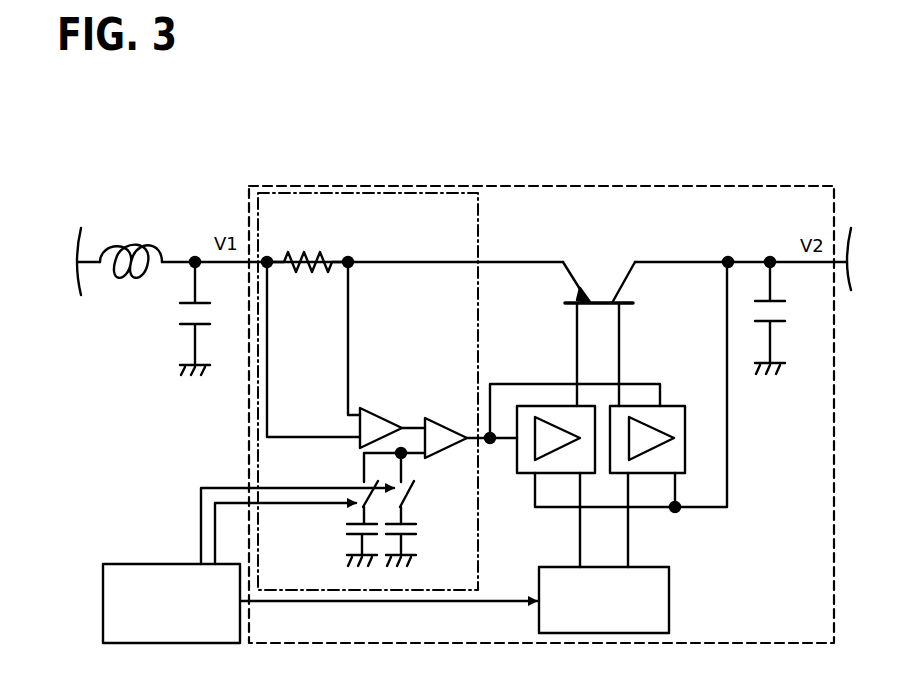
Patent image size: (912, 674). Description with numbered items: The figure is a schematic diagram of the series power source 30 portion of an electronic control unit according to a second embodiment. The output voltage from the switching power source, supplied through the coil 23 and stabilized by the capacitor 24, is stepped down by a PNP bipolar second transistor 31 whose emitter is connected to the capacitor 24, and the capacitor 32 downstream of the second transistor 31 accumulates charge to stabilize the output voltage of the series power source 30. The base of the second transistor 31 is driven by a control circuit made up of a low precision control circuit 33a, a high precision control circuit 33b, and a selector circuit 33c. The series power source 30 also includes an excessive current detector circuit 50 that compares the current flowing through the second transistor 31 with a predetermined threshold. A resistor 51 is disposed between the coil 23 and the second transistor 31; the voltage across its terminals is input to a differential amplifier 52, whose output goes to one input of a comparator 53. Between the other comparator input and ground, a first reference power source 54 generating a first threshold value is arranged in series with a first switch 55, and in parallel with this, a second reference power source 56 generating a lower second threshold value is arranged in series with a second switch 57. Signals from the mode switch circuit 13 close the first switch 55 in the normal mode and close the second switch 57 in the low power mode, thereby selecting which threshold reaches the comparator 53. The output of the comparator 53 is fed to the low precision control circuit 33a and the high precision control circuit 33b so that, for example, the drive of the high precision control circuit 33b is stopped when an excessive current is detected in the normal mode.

The mode switch circuit 13 is at (126, 563).
The coil 23 is at (133, 243).
The capacitor 24 is at (182, 322).
The series power source 30 is at (781, 185).
The second transistor 31 is at (618, 282).
The capacitor 32 is at (786, 318).
The low precision control circuit 33a is at (673, 405).
The high precision control circuit 33b is at (517, 466).
The selector circuit 33c is at (670, 588).
The excessive current detector circuit 50 is at (480, 214).
The resistor 51 is at (313, 249).
The differential amplifier 52 is at (373, 406).
The comparator 53 is at (436, 417).
The first reference power source 54 is at (410, 536).
The first switch 55 is at (416, 490).
The second reference power source 56 is at (350, 536).
The second switch 57 is at (359, 496).